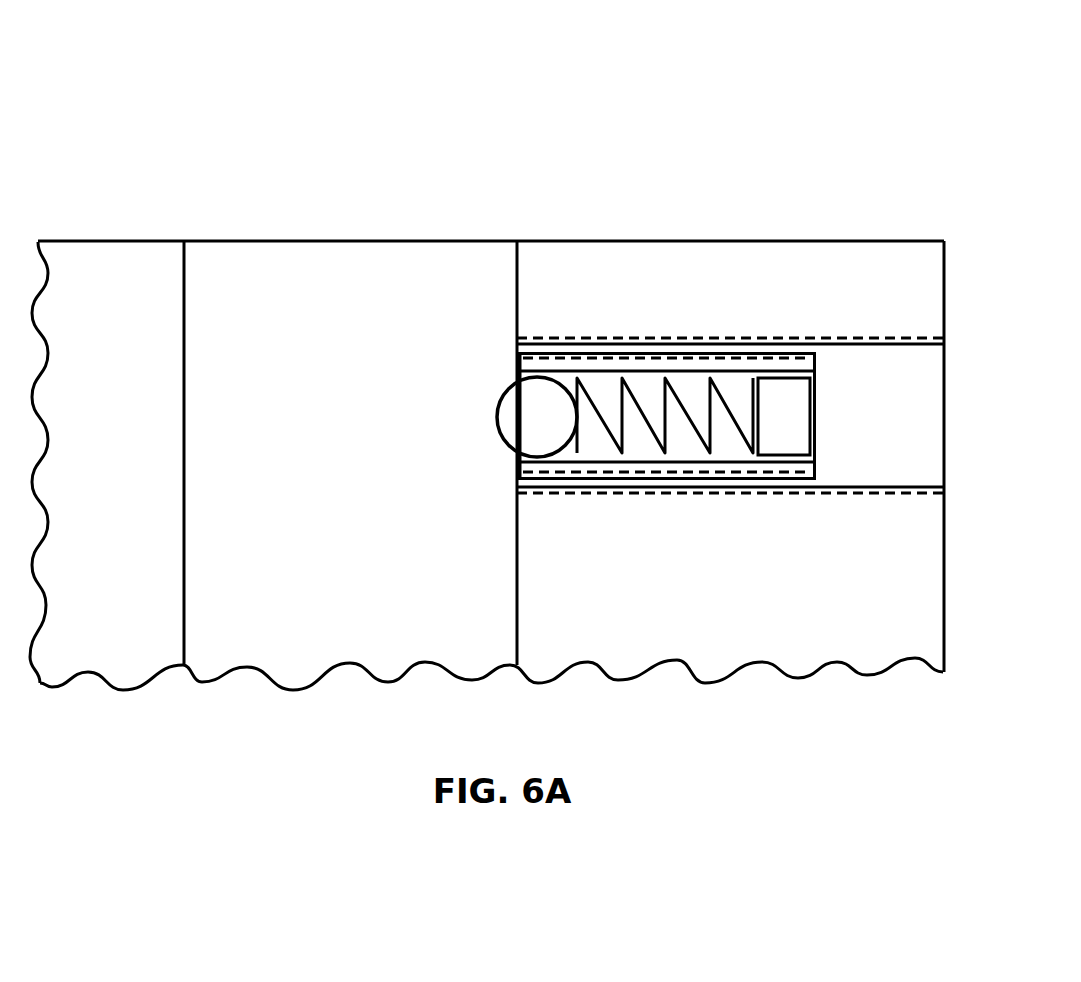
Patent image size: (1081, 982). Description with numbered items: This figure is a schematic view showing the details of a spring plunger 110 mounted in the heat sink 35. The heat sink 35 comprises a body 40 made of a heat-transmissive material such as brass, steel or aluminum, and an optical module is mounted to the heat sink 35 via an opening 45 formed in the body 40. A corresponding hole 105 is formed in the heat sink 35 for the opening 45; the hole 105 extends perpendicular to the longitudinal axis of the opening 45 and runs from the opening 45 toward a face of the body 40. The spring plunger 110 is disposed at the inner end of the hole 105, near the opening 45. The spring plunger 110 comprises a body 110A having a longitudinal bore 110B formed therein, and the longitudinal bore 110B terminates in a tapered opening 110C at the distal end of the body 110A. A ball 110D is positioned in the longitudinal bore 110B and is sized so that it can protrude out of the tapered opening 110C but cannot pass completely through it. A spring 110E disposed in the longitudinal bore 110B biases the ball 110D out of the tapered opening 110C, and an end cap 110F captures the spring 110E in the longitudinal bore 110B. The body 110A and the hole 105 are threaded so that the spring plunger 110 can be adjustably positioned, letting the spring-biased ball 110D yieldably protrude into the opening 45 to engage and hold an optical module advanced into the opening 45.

The heat sink 35 is at (342, 162).
The body 40 is at (768, 240).
The opening 45 is at (505, 302).
The hole 105 is at (888, 346).
The spring plunger 110 is at (723, 335).
The body 110A is at (602, 355).
The longitudinal bore 110B is at (723, 455).
The tapered opening 110C is at (528, 455).
The ball 110D is at (511, 422).
The spring 110E is at (647, 442).
The end cap 110F is at (804, 427).